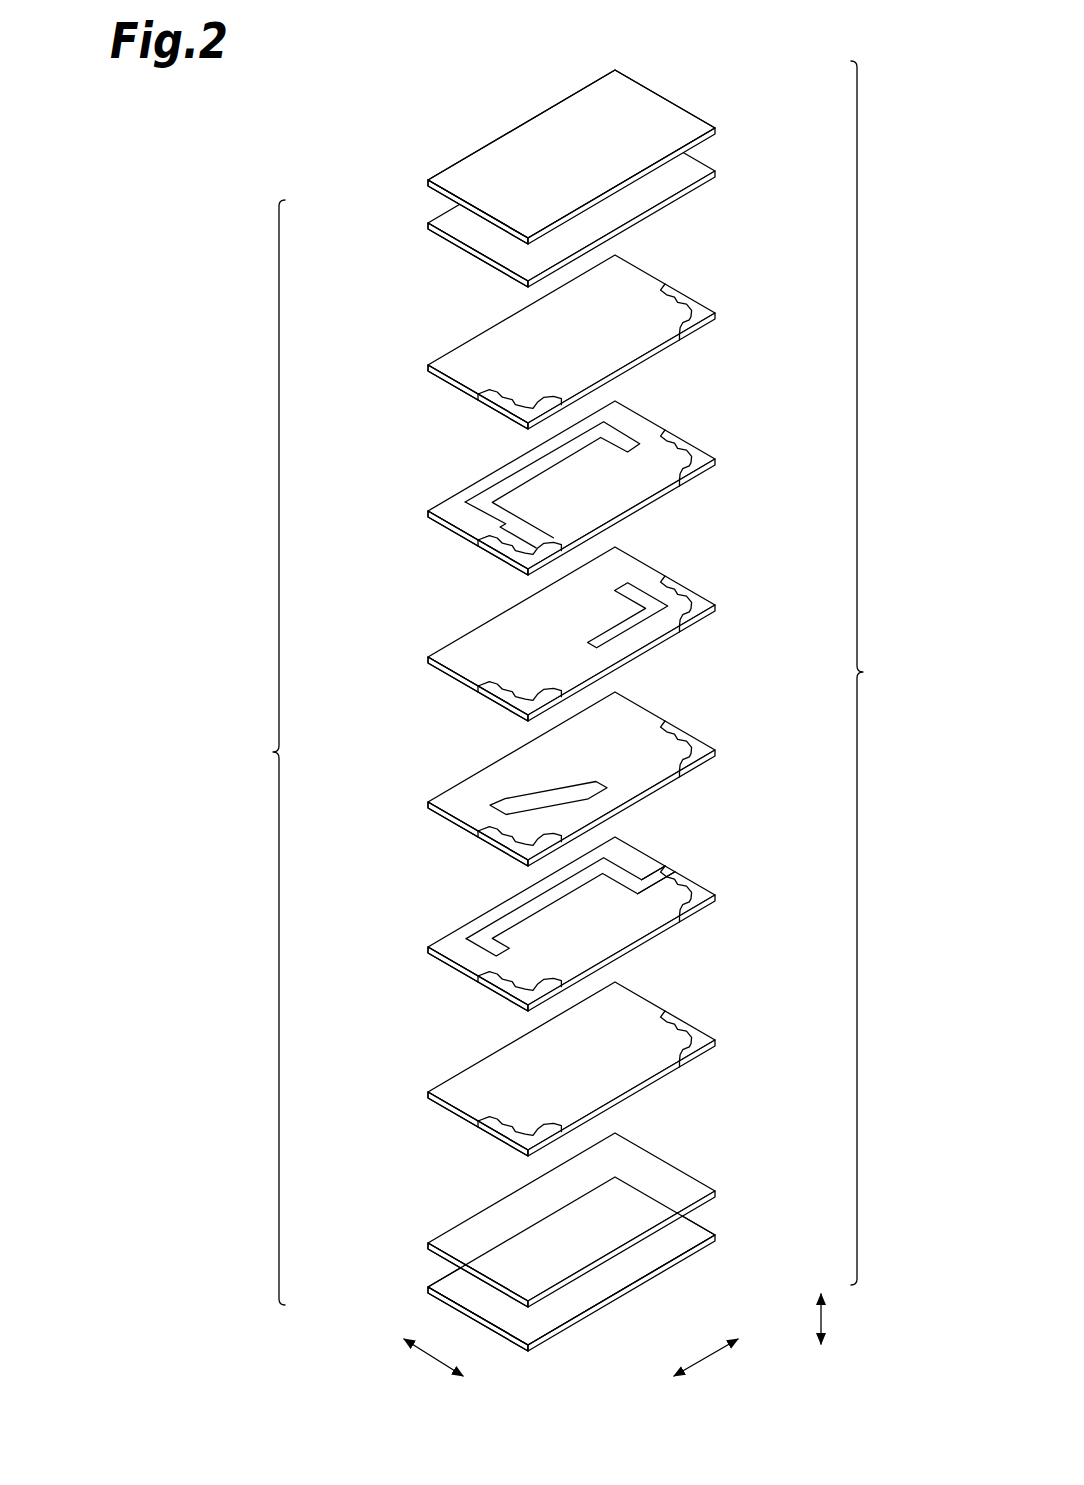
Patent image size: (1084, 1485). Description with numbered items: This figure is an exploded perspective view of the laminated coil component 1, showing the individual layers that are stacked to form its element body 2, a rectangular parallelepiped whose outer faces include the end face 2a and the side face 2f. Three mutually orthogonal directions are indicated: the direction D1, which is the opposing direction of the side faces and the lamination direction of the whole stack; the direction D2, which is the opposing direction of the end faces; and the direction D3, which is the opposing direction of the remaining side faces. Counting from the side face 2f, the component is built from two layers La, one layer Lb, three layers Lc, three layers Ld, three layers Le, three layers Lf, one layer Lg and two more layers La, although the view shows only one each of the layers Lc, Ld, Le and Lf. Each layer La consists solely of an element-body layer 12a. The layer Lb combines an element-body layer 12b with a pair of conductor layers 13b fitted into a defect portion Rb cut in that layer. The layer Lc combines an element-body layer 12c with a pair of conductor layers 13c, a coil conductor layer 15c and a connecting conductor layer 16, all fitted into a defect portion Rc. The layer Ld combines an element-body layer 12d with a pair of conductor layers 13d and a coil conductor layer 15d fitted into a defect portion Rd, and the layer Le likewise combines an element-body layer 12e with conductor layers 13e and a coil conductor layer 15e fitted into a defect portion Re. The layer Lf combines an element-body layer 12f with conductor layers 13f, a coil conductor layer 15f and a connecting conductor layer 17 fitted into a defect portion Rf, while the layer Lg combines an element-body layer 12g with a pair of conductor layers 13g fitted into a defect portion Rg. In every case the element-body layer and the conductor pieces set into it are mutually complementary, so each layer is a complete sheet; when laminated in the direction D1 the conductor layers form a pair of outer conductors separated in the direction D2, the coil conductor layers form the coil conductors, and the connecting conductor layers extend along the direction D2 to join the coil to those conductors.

The laminated coil component 1 is at (874, 673).
The element body 2 is at (270, 752).
The end face 2a is at (547, 157).
The side face 2f is at (592, 1275).
The layer La is at (728, 118).
The layer Lb is at (728, 1028).
The layer Lc is at (728, 886).
The layer Ld is at (728, 757).
The layer Le is at (728, 596).
The layer Lf is at (728, 455).
The layer Lg is at (725, 305).
The element-body layer 12a is at (428, 182).
The element-body layer 12b is at (428, 1092).
The element-body layer 12c is at (428, 947).
The element-body layer 12d is at (428, 802).
The element-body layer 12e is at (428, 657).
The element-body layer 12f is at (428, 511).
The element-body layer 12g is at (428, 366).
The conductor layer 13b is at (503, 1136).
The conductor layer 13c is at (503, 991).
The conductor layer 13d is at (503, 846).
The conductor layer 13e is at (503, 700).
The conductor layer 13f is at (500, 556).
The conductor layer 13g is at (503, 410).
The coil conductor layer 15c is at (623, 883).
The coil conductor layer 15d is at (510, 810).
The coil conductor layer 15e is at (642, 603).
The coil conductor layer 15f is at (510, 475).
The connecting conductor layer 16 is at (655, 878).
The connecting conductor layer 17 is at (495, 530).
The defect portion Rb is at (657, 1052).
The defect portion Rc is at (528, 917).
The defect portion Rd is at (657, 760).
The defect portion Re is at (668, 612).
The defect portion Rf is at (660, 475).
The defect portion Rg is at (669, 322).
The direction D1 is at (841, 1319).
The direction D2 is at (709, 1361).
The direction D3 is at (424, 1361).